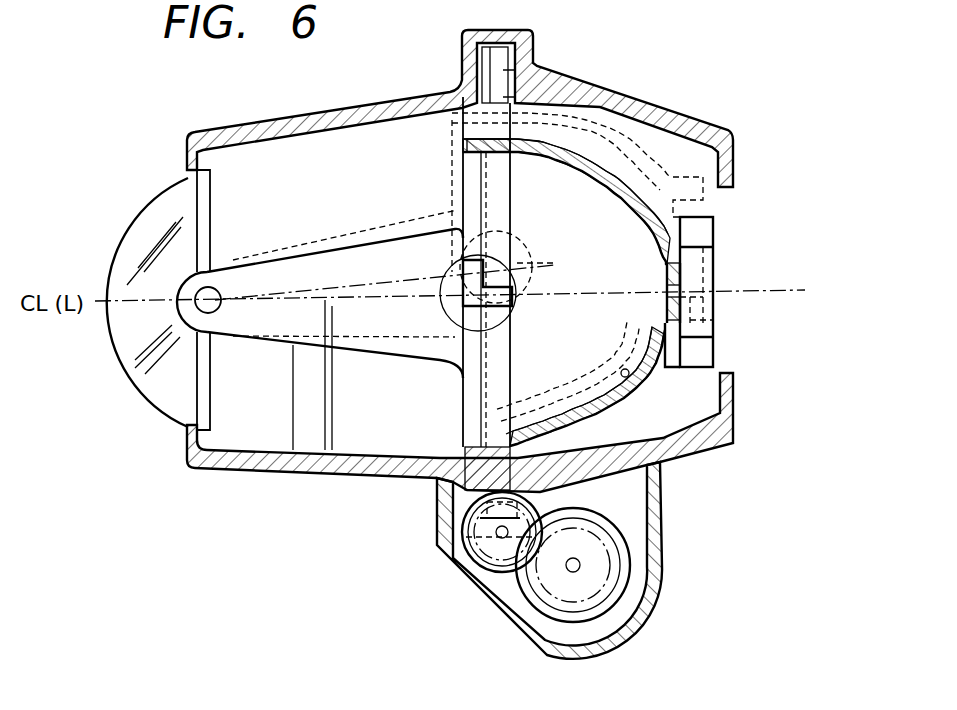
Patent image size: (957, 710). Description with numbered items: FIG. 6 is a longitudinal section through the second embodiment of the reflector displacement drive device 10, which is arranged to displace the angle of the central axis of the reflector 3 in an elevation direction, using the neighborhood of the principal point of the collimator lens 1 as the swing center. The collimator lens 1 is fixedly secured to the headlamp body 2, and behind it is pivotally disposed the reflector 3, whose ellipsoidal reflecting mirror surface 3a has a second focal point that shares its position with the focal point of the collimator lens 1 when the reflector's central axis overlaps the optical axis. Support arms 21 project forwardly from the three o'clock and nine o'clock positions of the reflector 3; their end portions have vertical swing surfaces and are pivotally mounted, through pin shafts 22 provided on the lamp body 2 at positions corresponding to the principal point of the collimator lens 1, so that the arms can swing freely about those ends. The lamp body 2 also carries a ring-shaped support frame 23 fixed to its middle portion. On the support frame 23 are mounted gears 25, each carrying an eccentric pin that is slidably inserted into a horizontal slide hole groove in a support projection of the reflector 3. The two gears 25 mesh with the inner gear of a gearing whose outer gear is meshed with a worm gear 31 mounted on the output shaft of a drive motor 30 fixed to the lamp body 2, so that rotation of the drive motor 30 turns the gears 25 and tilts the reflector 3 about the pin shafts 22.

The collimator lens 1 is at (128, 361).
The headlamp body 2 is at (237, 479).
The reflector 3 is at (617, 165).
The ellipsoidal reflecting mirror surface 3a is at (628, 377).
The reflector displacement drive device 10 is at (418, 423).
The support arm 21 is at (205, 350).
The pin shaft 22 is at (193, 274).
The ring-shaped support frame 23 is at (500, 60).
The gear 25 is at (500, 256).
The drive motor 30 is at (627, 577).
The worm gear 31 is at (467, 563).